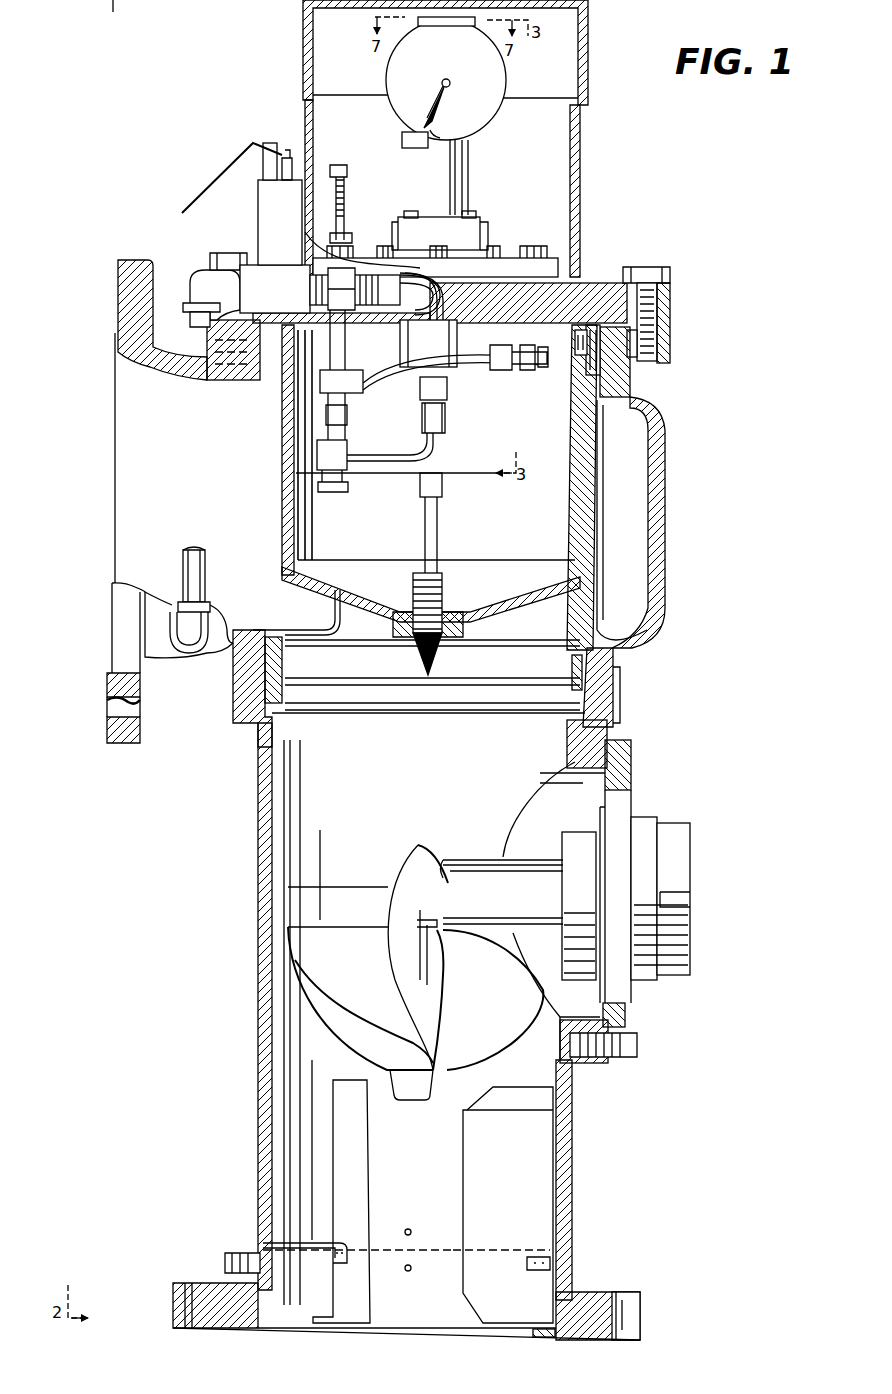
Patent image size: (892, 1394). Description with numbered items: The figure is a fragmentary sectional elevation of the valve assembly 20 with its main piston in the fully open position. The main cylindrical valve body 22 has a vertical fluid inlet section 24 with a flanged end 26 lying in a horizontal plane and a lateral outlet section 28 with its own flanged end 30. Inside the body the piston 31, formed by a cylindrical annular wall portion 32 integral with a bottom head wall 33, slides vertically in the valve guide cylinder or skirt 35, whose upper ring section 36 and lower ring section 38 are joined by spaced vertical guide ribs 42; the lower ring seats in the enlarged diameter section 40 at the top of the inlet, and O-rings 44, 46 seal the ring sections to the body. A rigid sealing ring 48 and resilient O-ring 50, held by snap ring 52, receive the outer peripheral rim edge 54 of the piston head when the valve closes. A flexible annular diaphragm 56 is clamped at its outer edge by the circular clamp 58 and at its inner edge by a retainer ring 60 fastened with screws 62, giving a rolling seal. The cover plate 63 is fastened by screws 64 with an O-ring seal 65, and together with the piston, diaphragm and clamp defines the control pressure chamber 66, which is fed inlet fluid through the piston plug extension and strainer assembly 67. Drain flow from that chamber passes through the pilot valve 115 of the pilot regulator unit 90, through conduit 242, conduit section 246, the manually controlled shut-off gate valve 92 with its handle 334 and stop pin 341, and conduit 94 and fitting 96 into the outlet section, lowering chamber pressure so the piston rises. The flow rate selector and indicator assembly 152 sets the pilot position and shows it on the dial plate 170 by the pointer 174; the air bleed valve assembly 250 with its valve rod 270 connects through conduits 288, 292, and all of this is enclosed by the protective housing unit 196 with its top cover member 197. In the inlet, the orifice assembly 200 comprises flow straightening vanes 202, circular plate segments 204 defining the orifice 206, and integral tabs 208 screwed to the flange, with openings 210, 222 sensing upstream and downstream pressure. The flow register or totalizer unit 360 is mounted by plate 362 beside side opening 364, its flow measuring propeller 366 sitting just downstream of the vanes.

The valve assembly 20 is at (135, 875).
The main cylindrical valve body 22 is at (655, 632).
The vertical fluid inlet section 24 is at (262, 785).
The flanged end of inlet section 26 is at (585, 1295).
The lateral outlet section 28 is at (165, 655).
The flanged end of outlet section 30 is at (118, 330).
The piston 31 is at (282, 520).
The cylindrical annular wall portion 32 is at (572, 472).
The bottom head wall 33 is at (560, 575).
The valve guide cylinder or skirt 35 is at (602, 458).
The upper ring section 36 is at (280, 425).
The lower ring section 38 is at (600, 700).
The enlarged diameter section 40 is at (245, 712).
The vertical guide ribs 42 is at (345, 610).
The O-ring 44 is at (630, 381).
The O-ring 46 is at (620, 672).
The rigid sealing ring 48 is at (300, 665).
The resilient O-ring 50 is at (570, 658).
The snap ring 52 is at (582, 700).
The outer peripheral rim edge 54 is at (570, 583).
The flexible annular diaphragm 56 is at (590, 372).
The circular clamp 58 is at (264, 294).
The retainer ring 60 is at (268, 380).
The screws 62 is at (304, 313).
The cover plate 63 is at (610, 283).
The screws 64 is at (660, 335).
The O-ring seal 65 is at (664, 350).
The variable volume control pressure chamber 66 is at (398, 523).
The piston plug extension and strainer assembly 67 is at (455, 560).
The pilot regulator unit 90 is at (485, 220).
The manually controlled shut-off gate valve 92 is at (215, 185).
The conduit 94 is at (190, 322).
The fitting 96 is at (200, 652).
The pilot valve 115 is at (455, 383).
The flow rate selector and indicator assembly 152 is at (485, 135).
The dial plate 170 is at (500, 77).
The pointer 174 is at (442, 90).
The protective housing unit 196 is at (580, 182).
The top cover member 197 is at (588, 80).
The orifice assembly 200 is at (323, 1218).
The flow straightening vanes 202 is at (467, 1130).
The circular plate segments 204 is at (540, 1257).
The orifice 206 is at (330, 1248).
The integral tab 208 is at (545, 1329).
The opening 210 is at (411, 1270).
The opening 222 is at (410, 1228).
The conduit 242 is at (485, 370).
The conduit section 246 is at (410, 330).
The air bleed valve assembly 250 is at (352, 415).
The valve rod 270 is at (347, 210).
The conduit 288 is at (462, 372).
The conduit 292 is at (428, 455).
The handle 334 is at (240, 150).
The stop pin 341 is at (258, 240).
The flow register or totalizer unit 360 is at (672, 822).
The plate 362 is at (631, 773).
The side opening 364 is at (570, 773).
The flow measuring propeller 366 is at (378, 930).